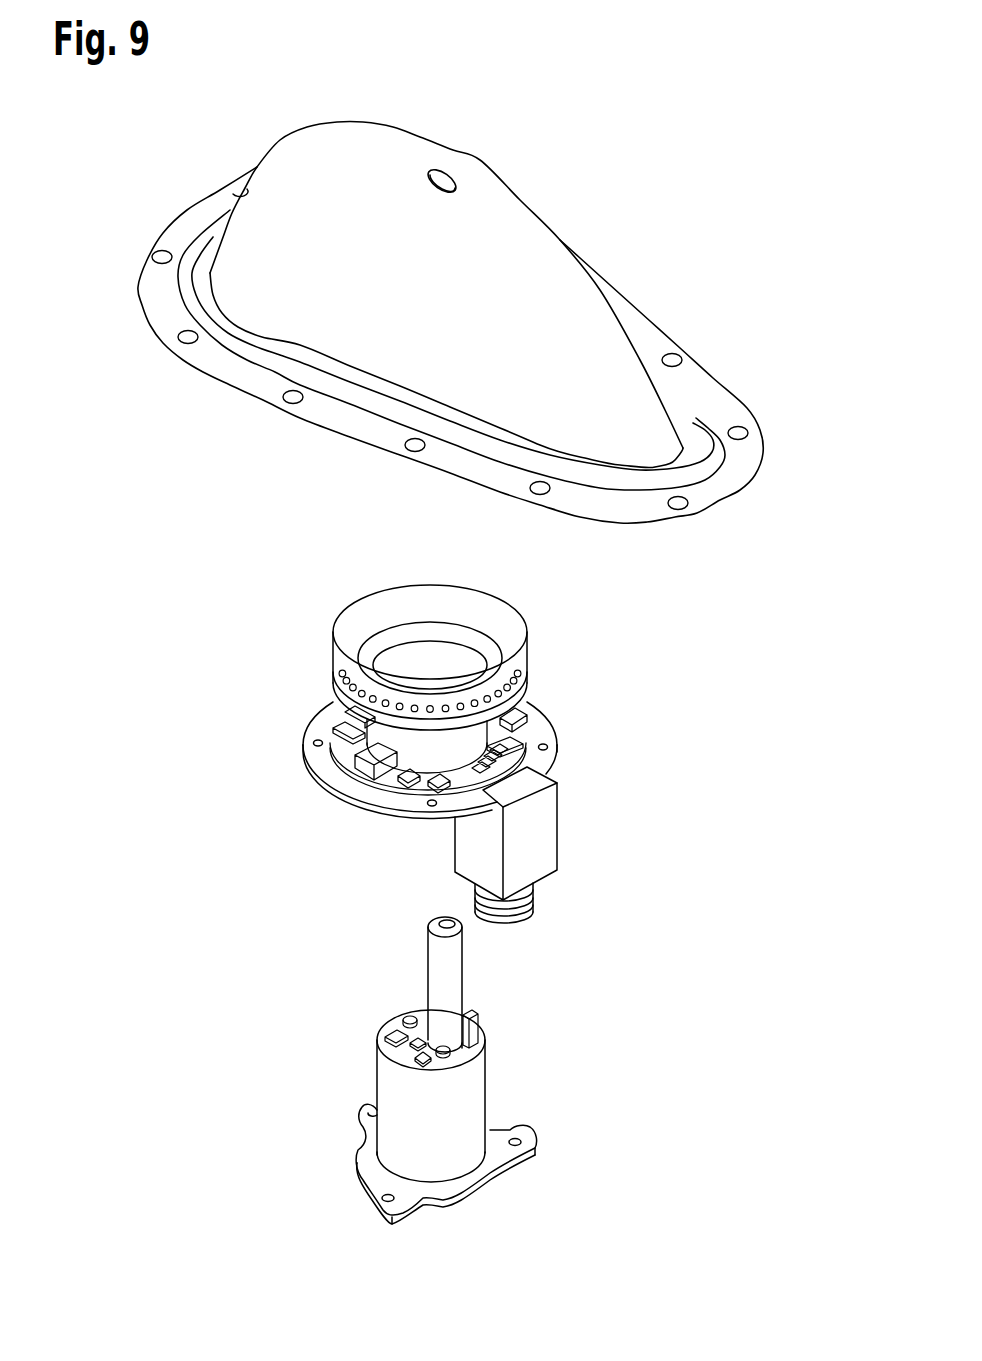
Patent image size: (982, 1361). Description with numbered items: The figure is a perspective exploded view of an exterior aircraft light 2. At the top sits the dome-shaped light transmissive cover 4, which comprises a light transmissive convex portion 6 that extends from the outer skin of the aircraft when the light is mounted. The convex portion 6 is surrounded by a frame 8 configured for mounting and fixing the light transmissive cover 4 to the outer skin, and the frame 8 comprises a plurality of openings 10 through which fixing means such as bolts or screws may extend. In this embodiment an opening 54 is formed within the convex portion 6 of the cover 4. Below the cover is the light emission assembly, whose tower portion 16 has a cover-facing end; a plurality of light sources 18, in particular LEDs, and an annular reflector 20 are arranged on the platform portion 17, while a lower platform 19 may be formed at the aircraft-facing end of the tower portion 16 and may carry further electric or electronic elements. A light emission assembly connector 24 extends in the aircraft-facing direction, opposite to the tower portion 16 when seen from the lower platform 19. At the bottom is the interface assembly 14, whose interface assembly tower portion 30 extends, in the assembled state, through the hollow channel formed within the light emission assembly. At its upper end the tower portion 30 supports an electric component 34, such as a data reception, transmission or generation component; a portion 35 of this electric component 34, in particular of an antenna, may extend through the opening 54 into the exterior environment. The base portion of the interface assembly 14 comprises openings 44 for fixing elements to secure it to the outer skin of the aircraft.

The exterior aircraft light 2 is at (139, 1236).
The light transmissive cover 4 is at (619, 151).
The convex portion 6 is at (577, 313).
The frame 8 is at (702, 395).
The openings 10 is at (740, 432).
The opening 54 is at (449, 164).
The annular reflector 20 is at (539, 613).
The platform portion 17 is at (333, 666).
The light sources 18 is at (527, 680).
The lower platform 19 is at (333, 782).
The tower portion 16 is at (424, 746).
The light emission assembly connector 24 is at (581, 833).
The interface assembly 14 is at (290, 1046).
The interface assembly tower portion 30 is at (402, 1115).
The electric component 34 is at (403, 994).
The portion of an electric component 35 is at (448, 976).
The openings 44 is at (370, 1200).